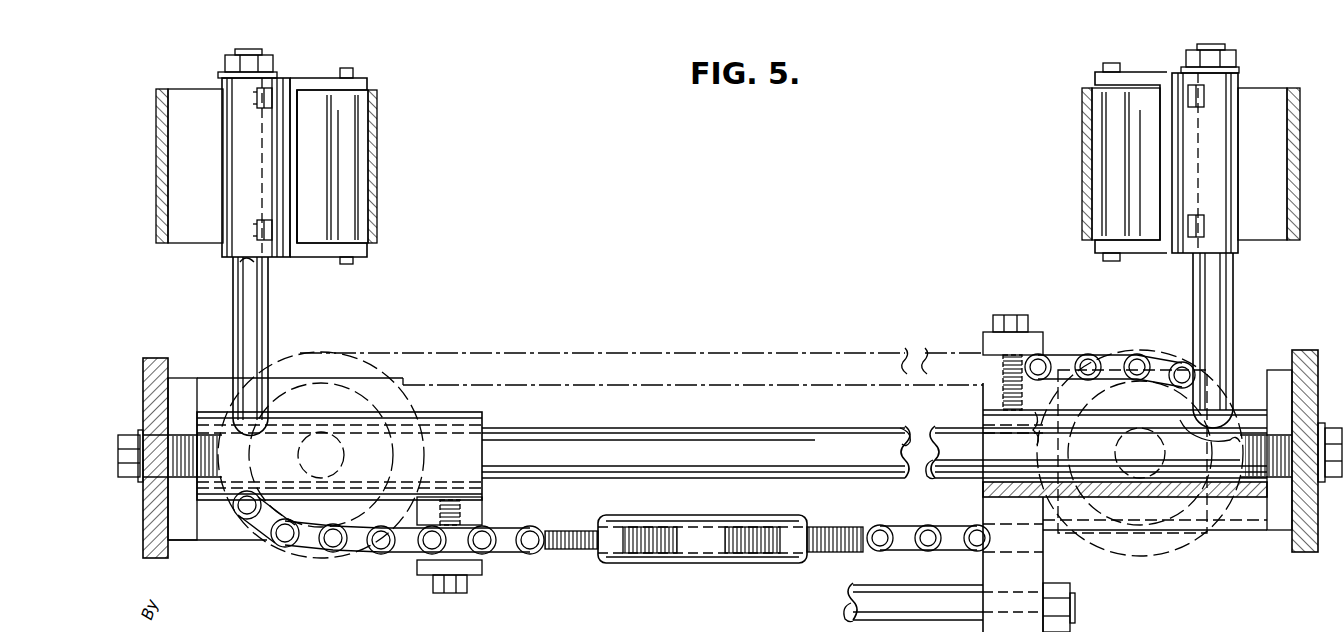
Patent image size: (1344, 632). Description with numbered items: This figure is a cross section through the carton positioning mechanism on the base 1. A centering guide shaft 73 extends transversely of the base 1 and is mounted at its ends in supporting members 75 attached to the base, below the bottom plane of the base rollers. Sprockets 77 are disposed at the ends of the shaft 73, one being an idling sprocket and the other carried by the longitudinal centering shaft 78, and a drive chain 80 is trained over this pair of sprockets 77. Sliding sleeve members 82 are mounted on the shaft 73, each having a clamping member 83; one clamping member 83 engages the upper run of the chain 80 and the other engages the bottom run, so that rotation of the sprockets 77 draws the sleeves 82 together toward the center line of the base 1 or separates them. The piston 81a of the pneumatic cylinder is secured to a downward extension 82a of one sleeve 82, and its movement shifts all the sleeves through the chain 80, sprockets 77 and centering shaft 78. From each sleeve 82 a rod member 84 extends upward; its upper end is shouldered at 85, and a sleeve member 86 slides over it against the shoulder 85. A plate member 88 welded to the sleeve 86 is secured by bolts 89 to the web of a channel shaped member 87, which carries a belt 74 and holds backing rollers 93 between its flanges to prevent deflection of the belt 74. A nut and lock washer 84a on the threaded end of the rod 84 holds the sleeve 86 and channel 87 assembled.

The base 1 is at (138, 367).
The centering guide shaft 73 is at (642, 428).
The belt 74 is at (160, 212).
The supporting member 75 is at (179, 385).
The sprocket 77 is at (310, 355).
The centering shaft 78 is at (332, 438).
The drive chain 80 is at (952, 547).
The piston 81a is at (855, 589).
The sliding sleeve member 82 is at (482, 416).
The downward extension 82a is at (1043, 565).
The clamping member 83 is at (482, 508).
The rod member 84 is at (270, 289).
The nut and lock washer 84a is at (268, 70).
The shoulder 85 is at (242, 261).
The sleeve member 86 is at (222, 154).
The channel shaped member 87 is at (300, 128).
The plate member 88 is at (288, 149).
The bolt 89 is at (257, 101).
The backing roller 93 is at (348, 167).